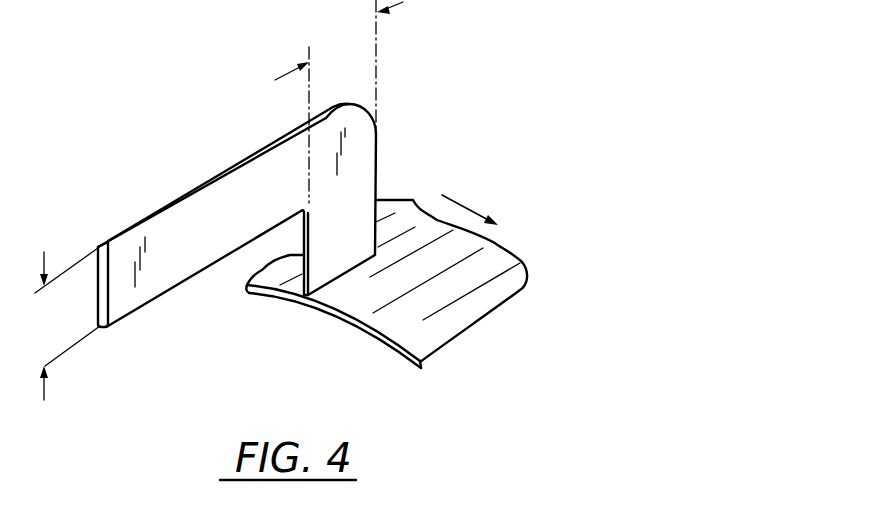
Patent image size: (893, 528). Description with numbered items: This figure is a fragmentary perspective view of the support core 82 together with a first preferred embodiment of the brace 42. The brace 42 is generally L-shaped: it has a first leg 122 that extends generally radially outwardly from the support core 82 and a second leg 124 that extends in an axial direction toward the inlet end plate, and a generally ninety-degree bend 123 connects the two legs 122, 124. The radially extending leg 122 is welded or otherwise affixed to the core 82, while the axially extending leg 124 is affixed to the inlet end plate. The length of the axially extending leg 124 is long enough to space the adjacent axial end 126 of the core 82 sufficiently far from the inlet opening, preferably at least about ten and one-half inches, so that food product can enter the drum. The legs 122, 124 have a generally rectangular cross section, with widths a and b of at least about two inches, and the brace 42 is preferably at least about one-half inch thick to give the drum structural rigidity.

The brace 42 is at (399, 110).
The support core 82 is at (503, 263).
The first leg 122 is at (377, 238).
The bend 123 is at (372, 147).
The second leg 124 is at (192, 192).
The axial end 126 is at (383, 334).